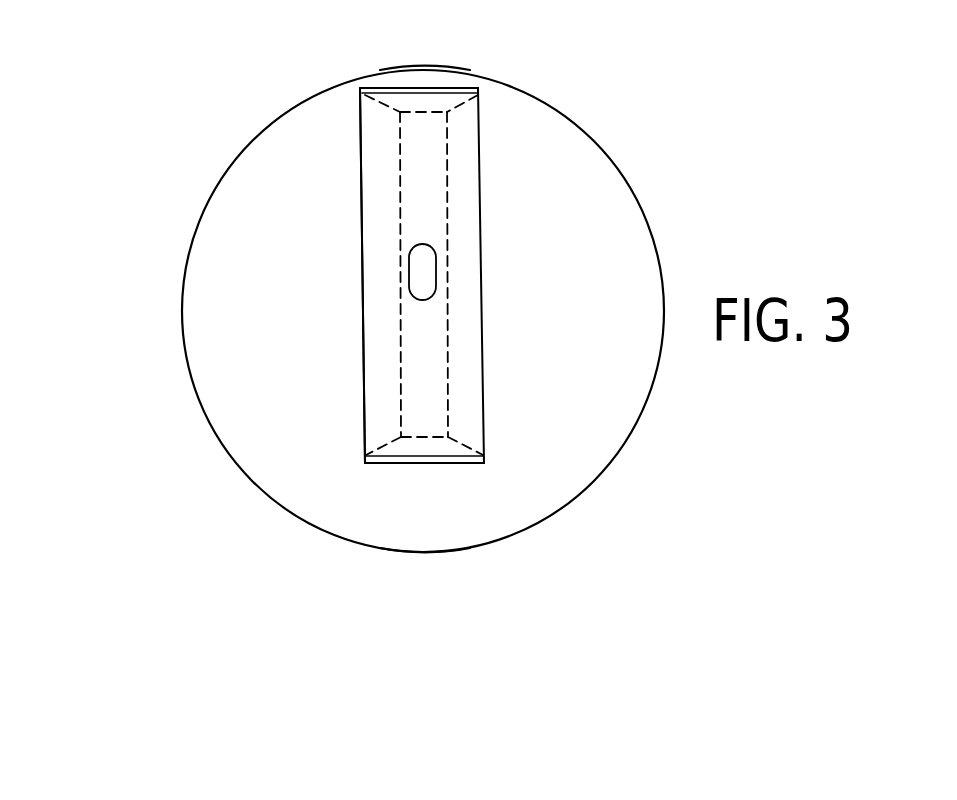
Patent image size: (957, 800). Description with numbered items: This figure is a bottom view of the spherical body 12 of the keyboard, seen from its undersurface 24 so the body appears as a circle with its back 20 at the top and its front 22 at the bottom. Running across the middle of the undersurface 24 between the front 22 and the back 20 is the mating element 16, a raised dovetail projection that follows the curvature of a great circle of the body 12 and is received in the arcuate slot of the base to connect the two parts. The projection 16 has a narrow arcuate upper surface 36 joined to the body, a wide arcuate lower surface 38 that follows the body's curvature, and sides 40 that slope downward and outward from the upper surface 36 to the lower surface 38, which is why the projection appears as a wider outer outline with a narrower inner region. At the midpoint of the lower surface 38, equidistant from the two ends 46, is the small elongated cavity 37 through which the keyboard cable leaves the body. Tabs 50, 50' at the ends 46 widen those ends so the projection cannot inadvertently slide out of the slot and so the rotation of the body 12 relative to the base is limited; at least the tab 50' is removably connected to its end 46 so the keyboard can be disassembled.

The spherical body 12 is at (180, 308).
The mating element (raised projection) 16 is at (362, 272).
The back 20 is at (420, 70).
The front 22 is at (425, 552).
The undersurface 24 is at (568, 348).
The upper surface 36 is at (442, 419).
The cavity 37 is at (422, 278).
The lower surface 38 is at (382, 395).
The sides 40 is at (388, 108).
The ends 46 is at (402, 88).
The tab 50 is at (470, 467).
The removable tab 50' is at (516, 118).